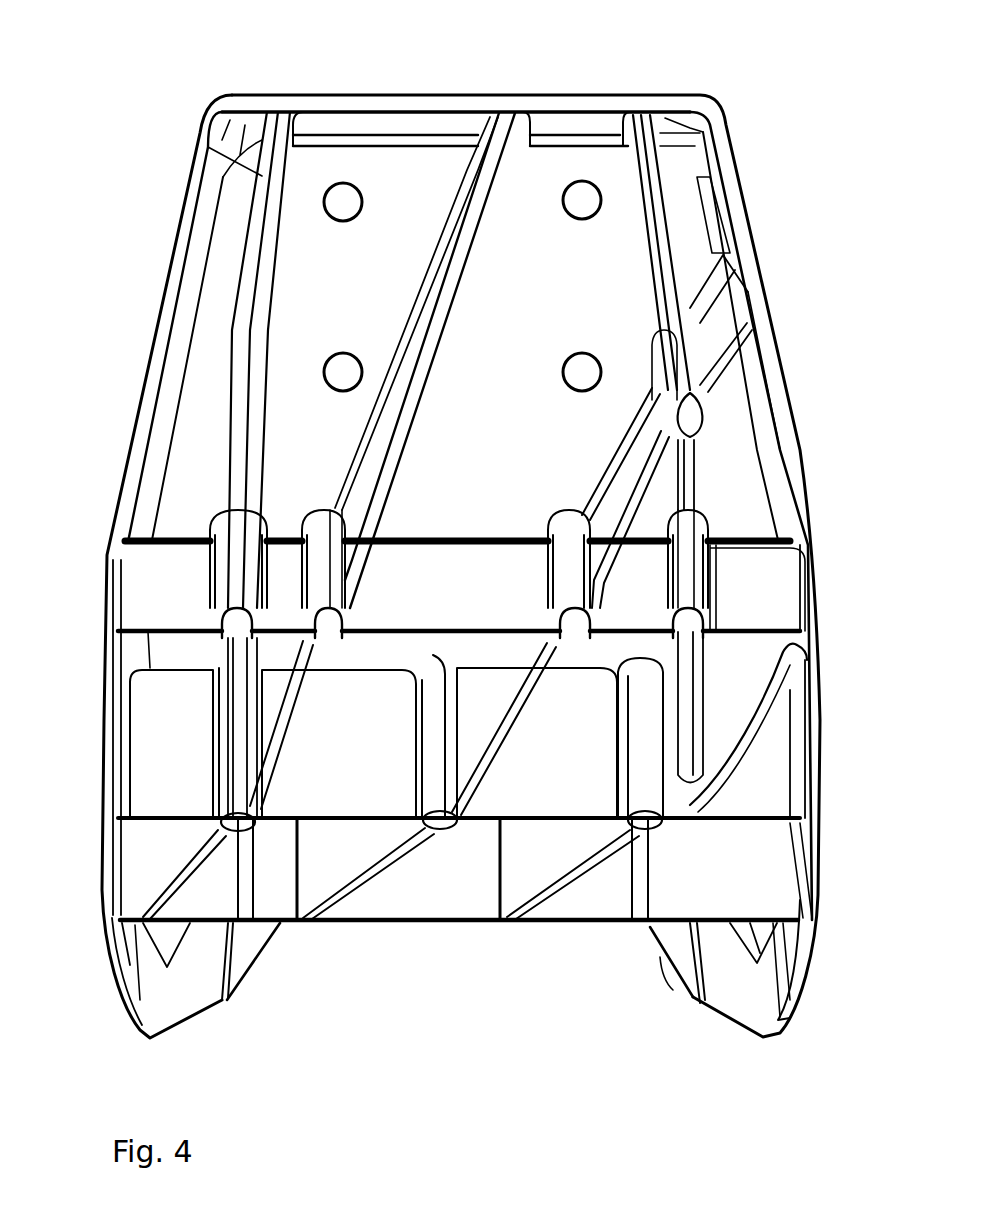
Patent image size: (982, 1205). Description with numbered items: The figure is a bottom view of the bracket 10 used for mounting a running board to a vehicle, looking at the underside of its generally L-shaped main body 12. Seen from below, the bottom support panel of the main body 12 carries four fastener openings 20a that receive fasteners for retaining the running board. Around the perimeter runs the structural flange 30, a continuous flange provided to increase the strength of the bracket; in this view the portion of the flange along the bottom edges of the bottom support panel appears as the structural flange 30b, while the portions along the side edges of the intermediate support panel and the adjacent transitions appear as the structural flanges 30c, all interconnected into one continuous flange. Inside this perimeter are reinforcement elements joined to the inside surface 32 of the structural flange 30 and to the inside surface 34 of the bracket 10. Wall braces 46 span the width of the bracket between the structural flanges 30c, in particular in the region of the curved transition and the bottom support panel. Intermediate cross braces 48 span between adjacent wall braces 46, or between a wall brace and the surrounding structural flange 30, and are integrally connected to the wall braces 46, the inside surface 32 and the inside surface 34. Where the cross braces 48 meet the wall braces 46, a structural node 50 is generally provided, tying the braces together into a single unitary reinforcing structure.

The bracket 10 is at (817, 138).
The main body 12 is at (118, 470).
The fastener openings 20a is at (583, 196).
The structural flange 30 is at (823, 573).
The structural flange 30b is at (550, 100).
The structural flange 30c is at (826, 690).
The inside surface of the structural flange 32 is at (737, 990).
The inside surface of the bracket 34 is at (373, 646).
The wall braces 46 is at (462, 578).
The intermediate cross braces 48 is at (485, 226).
The structural node 50 is at (556, 552).